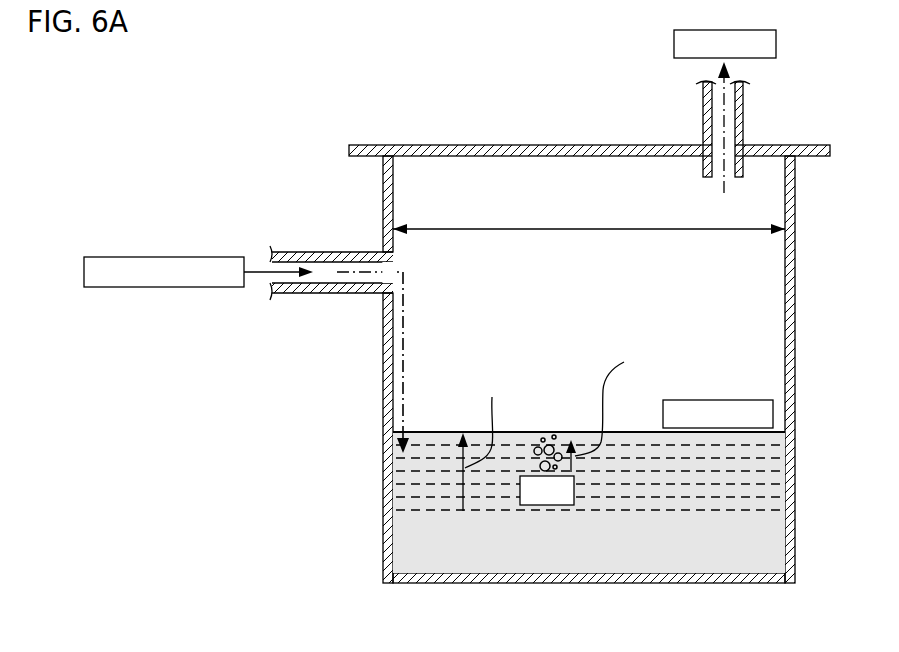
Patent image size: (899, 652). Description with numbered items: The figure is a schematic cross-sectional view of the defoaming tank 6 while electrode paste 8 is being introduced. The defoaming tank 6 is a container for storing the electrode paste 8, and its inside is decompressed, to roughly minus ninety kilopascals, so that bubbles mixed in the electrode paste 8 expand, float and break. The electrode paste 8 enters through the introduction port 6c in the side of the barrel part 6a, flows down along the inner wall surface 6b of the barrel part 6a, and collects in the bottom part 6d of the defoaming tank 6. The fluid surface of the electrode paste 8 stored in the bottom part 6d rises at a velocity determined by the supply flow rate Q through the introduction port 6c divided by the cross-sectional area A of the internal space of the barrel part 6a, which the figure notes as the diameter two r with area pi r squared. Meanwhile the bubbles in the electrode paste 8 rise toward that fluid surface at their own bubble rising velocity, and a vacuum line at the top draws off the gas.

The defoaming tank 6 is at (539, 334).
The barrel part 6a is at (806, 308).
The inner wall surface 6b is at (392, 374).
The introduction port 6c is at (394, 262).
The bottom part 6d is at (676, 560).
The electrode paste 8 is at (164, 287).